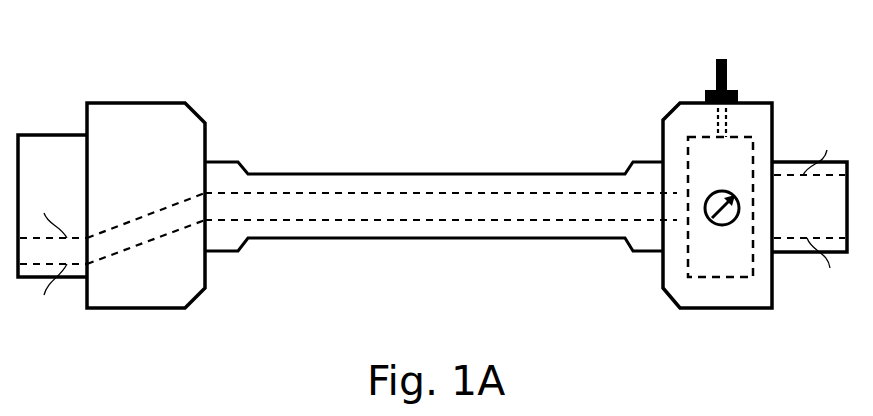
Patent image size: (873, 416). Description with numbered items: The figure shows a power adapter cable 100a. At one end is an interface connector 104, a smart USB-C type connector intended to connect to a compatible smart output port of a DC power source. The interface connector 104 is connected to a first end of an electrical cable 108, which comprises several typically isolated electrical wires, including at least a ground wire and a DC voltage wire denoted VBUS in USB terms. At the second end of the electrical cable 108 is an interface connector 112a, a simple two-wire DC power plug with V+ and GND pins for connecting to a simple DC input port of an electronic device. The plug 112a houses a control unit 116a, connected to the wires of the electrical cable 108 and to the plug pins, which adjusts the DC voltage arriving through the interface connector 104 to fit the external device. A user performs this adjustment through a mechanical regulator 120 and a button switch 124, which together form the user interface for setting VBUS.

The power adapter cable 100a is at (208, 72).
The interface connector 104 is at (88, 103).
The electrical cable 108 is at (417, 174).
The interface connector 112a is at (675, 110).
The control unit 116a is at (698, 282).
The mechanical regulator 120 is at (722, 192).
The button switch 124 is at (737, 95).